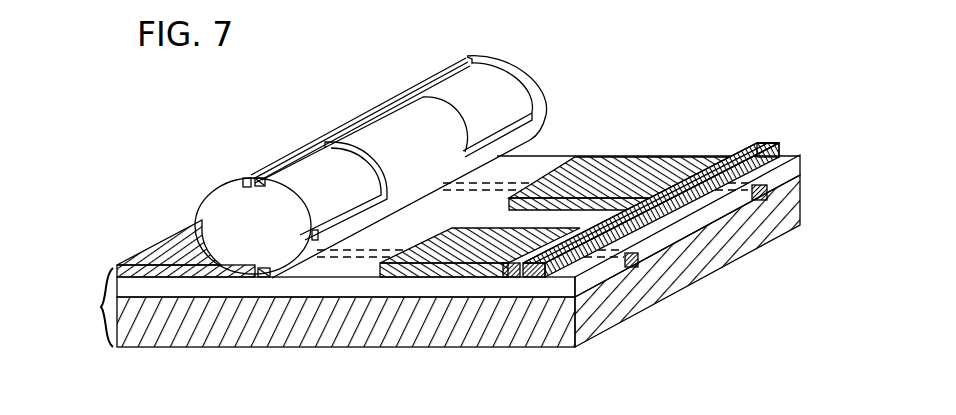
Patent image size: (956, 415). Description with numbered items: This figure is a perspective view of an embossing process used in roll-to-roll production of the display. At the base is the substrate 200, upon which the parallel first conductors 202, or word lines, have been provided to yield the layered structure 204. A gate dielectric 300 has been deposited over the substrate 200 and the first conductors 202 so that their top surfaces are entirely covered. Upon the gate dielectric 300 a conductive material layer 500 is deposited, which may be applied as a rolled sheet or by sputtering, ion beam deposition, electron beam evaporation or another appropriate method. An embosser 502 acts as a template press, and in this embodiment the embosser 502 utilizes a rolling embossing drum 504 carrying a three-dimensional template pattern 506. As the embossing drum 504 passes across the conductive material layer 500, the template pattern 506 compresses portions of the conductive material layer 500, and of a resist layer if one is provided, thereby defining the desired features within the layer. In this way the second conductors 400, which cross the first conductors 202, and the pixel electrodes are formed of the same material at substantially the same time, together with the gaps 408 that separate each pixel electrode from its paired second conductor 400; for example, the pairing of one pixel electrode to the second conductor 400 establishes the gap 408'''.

The substrate 200 is at (777, 217).
The first conductor 202 is at (635, 262).
The layered structure 204 is at (84, 307).
The gate dielectric 300 is at (778, 177).
The second conductor 400 is at (763, 143).
The gap 408 is at (529, 333).
The gap 408''' is at (651, 179).
The conductive material layer 500 is at (172, 256).
The embosser 502 is at (514, 90).
The embossing drum 504 is at (269, 231).
The 3-D template pattern 506 is at (248, 178).